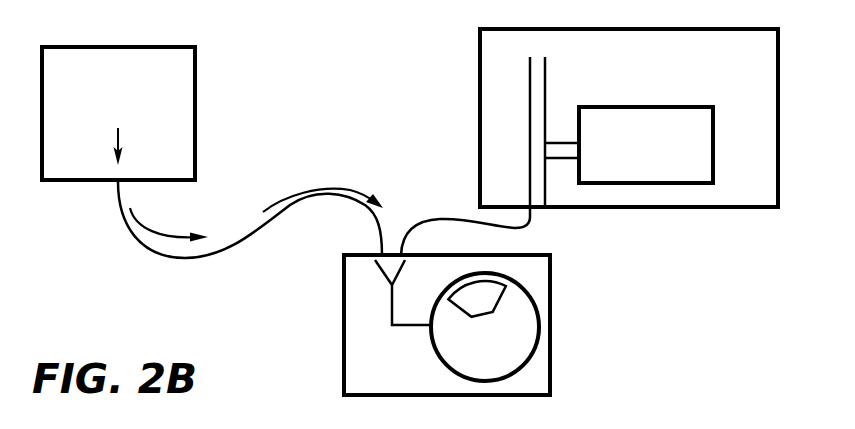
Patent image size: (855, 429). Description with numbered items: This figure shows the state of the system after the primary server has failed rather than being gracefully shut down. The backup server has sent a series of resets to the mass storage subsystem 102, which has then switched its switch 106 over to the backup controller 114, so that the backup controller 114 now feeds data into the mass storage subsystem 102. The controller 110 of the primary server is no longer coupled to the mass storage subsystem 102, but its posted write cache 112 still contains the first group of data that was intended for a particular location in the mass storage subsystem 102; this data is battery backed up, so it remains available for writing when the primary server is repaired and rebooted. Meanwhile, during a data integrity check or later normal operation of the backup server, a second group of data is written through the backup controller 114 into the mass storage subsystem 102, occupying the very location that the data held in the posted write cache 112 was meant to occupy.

The mass storage subsystem 102 is at (470, 314).
The switch 106 is at (398, 276).
The controller 110 is at (629, 104).
The posted write cache 112 is at (627, 107).
The backup controller 114 is at (140, 47).